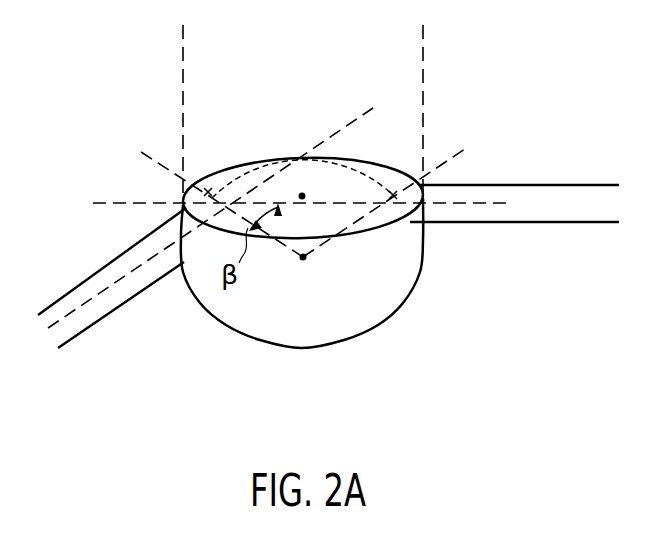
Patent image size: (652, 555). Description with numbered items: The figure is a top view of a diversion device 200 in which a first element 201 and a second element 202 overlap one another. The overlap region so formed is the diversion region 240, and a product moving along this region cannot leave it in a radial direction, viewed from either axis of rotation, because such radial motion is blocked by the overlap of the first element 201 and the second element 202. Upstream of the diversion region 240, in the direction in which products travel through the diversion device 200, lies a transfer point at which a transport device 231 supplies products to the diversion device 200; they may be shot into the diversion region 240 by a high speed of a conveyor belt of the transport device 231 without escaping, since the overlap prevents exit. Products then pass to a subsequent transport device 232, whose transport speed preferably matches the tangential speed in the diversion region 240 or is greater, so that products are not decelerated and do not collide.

The diversion device 200 is at (330, 268).
The first element 201 is at (398, 304).
The second element 202 is at (232, 163).
The transport device 231 is at (120, 307).
The subsequent transport device 232 is at (578, 185).
The diversion region 240 is at (423, 31).